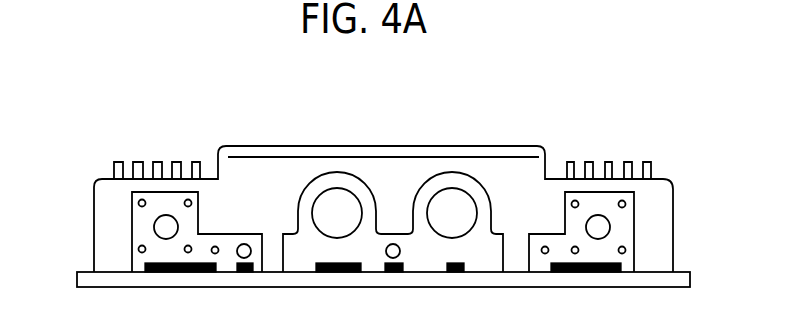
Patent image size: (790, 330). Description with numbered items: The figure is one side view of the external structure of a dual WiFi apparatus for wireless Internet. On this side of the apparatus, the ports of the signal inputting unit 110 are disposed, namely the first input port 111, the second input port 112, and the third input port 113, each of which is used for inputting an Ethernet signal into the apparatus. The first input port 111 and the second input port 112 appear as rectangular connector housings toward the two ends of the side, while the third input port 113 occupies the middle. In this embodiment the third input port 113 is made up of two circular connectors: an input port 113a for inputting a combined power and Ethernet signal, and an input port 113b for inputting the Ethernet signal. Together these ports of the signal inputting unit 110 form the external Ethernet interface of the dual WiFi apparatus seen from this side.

The signal inputting unit 110 is at (208, 158).
The first input port 111 is at (596, 228).
The second input port 112 is at (167, 230).
The third input port 113 is at (399, 151).
The input port for inputting a power+Ethernet signal 113a is at (457, 170).
The input port for inputting the Ethernet signal 113b is at (333, 202).